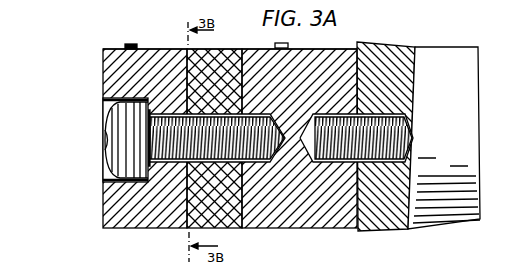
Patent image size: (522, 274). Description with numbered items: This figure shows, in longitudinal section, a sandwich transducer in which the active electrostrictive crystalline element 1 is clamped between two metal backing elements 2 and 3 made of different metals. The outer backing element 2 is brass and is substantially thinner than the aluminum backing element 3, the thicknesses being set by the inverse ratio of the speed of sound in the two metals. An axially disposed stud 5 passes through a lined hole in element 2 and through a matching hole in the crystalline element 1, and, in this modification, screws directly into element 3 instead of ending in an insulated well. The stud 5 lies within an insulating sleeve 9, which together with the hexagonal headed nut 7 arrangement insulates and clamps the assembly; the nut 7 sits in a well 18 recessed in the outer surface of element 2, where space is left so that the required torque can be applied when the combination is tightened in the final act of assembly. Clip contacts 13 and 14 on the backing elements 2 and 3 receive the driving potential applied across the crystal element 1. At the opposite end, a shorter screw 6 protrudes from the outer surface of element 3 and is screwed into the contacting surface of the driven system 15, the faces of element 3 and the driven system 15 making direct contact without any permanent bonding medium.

The electrostrictive crystalline element 1 is at (222, 49).
The metal backing element 2 is at (125, 228).
The metal backing element 3 is at (315, 215).
The stud 5 is at (258, 160).
The screw 6 is at (380, 113).
The hexagonal headed nut 7 is at (127, 143).
The insulating sleeve 9 is at (172, 112).
The clip contact 13 is at (127, 48).
The clip contact 14 is at (293, 47).
The driven system 15 is at (402, 50).
The well 18 is at (104, 106).